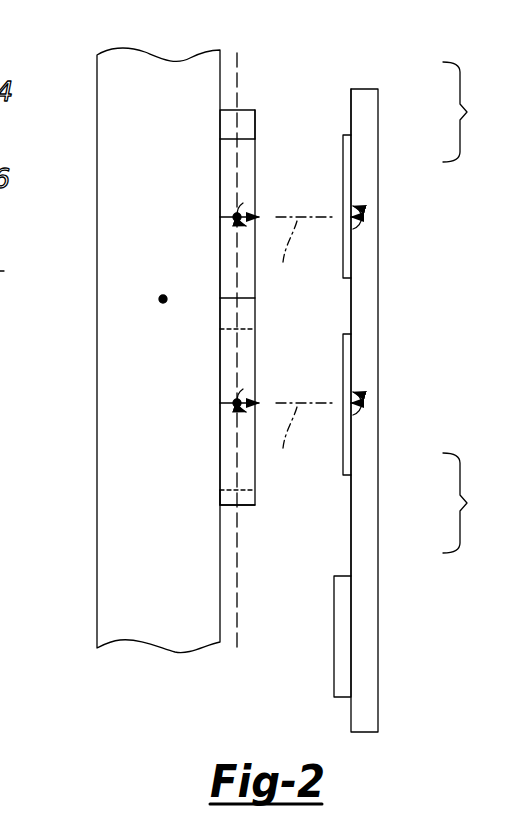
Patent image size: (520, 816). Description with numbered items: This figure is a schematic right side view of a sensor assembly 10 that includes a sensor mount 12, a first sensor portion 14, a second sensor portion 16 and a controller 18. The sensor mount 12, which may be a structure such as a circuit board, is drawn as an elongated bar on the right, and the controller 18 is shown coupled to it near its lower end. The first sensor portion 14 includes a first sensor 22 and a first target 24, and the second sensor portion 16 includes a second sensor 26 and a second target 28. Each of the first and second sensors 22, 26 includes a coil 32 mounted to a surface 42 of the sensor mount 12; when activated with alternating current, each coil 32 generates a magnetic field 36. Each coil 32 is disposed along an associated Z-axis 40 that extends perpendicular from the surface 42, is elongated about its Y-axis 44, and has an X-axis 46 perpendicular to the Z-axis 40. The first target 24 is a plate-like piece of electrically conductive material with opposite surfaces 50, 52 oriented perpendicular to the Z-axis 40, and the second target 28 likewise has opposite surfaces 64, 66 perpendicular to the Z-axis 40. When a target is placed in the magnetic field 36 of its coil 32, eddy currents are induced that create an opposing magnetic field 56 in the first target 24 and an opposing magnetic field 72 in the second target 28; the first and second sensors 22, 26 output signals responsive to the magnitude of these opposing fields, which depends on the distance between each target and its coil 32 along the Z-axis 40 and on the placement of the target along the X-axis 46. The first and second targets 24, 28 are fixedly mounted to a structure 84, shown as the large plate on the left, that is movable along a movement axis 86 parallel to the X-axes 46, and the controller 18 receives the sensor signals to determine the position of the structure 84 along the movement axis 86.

The sensor assembly 10 is at (405, 308).
The sensor mount 12 is at (370, 640).
The first sensor portion 14 is at (470, 112).
The second sensor portion 16 is at (470, 503).
The controller 18 is at (334, 682).
The first sensor 22 is at (360, 130).
The first target 24 is at (243, 137).
The second sensor 26 is at (352, 460).
The second target 28 is at (247, 496).
The coil 32 is at (345, 278).
The magnetic field 36 is at (375, 206).
The Z-axis 40 is at (282, 352).
The surface 42 is at (351, 555).
The Y-axis 44 is at (237, 620).
The X-axis 46 is at (238, 215).
The surface 50 is at (220, 120).
The surface 52 is at (257, 125).
The opposing magnetic field 56 is at (228, 206).
The surface 64 is at (220, 502).
The surface 66 is at (255, 505).
The opposing magnetic field 72 is at (228, 392).
The structure 84 is at (112, 107).
The movement axis 86 is at (162, 299).